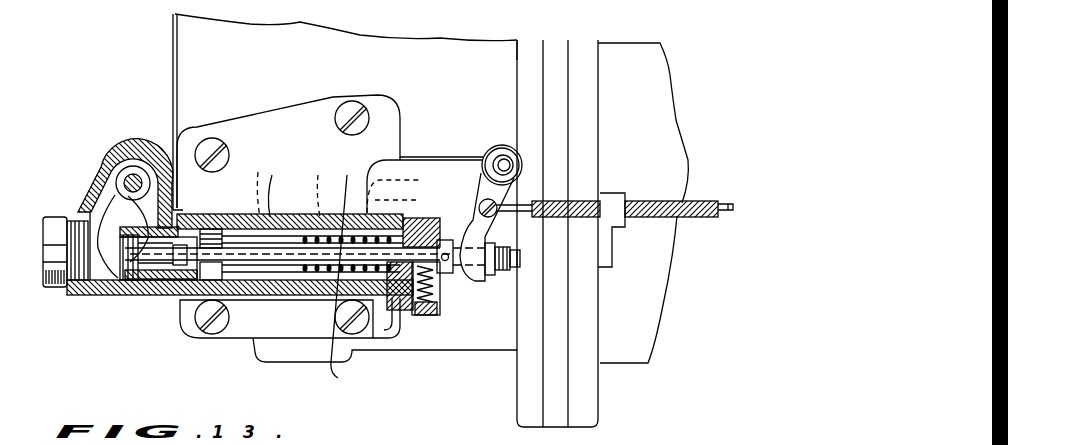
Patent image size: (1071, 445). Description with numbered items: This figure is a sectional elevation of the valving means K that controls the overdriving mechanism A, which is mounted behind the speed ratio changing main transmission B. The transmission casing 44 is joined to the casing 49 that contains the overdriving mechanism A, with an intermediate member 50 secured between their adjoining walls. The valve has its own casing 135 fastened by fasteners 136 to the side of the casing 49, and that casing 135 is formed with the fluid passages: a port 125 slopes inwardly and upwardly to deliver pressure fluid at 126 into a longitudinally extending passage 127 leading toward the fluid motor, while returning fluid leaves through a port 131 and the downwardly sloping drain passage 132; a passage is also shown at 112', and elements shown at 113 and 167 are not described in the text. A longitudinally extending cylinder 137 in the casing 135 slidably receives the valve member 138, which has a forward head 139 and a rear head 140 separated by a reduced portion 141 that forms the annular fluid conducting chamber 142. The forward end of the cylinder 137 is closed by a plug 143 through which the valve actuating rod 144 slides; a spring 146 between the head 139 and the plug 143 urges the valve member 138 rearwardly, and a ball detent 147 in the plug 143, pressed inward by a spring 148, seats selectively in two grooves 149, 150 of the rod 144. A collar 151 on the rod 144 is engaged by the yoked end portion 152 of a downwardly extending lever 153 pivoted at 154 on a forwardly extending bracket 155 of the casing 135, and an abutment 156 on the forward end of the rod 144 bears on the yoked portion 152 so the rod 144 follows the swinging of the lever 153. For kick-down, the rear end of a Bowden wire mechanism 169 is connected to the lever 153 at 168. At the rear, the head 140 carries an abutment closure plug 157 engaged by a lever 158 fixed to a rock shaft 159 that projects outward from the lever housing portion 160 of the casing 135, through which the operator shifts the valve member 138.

The casing 49 is at (318, 38).
The intermediate member 50 is at (550, 42).
The over-driving mechanism A is at (507, 16).
The casing 44 is at (628, 52).
The main transmission B is at (664, 80).
The connection 168 is at (515, 200).
The Bowden wire mechanism 169 is at (664, 203).
The casing 135 is at (383, 133).
The fasteners 136 is at (345, 105).
The reduced portion 141 is at (232, 310).
The drain passage 132 is at (335, 317).
The lever housing portion 160 is at (110, 167).
The rock shaft 159 is at (134, 168).
The lever 158 is at (90, 206).
The upper wall 167 is at (207, 215).
The valve member 138 is at (185, 213).
The cylinder 137 is at (243, 213).
The port 131 is at (306, 228).
The groove 150 is at (385, 262).
The port 125 is at (310, 318).
The cavity 113 is at (135, 250).
The piston plate 112' is at (150, 279).
The rear head 140 is at (112, 296).
The annular fluid conducting chamber 142 is at (140, 300).
The abutment closure plug 157 is at (118, 285).
The delivery point 126 is at (262, 186).
The forward head 139 is at (292, 189).
The passage 127 is at (319, 195).
The valving means K is at (339, 283).
The spring 146 is at (367, 195).
The bracket 155 is at (427, 167).
The pivot 154 is at (497, 146).
The lever 153 is at (484, 156).
The plug 143 is at (486, 170).
The groove 149 is at (480, 210).
The abutment 156 is at (503, 241).
The yoked end portion 152 is at (500, 278).
The collar 151 is at (488, 282).
The ball detent 147 is at (440, 285).
The spring 148 is at (441, 300).
The valve actuating rod 144 is at (400, 320).